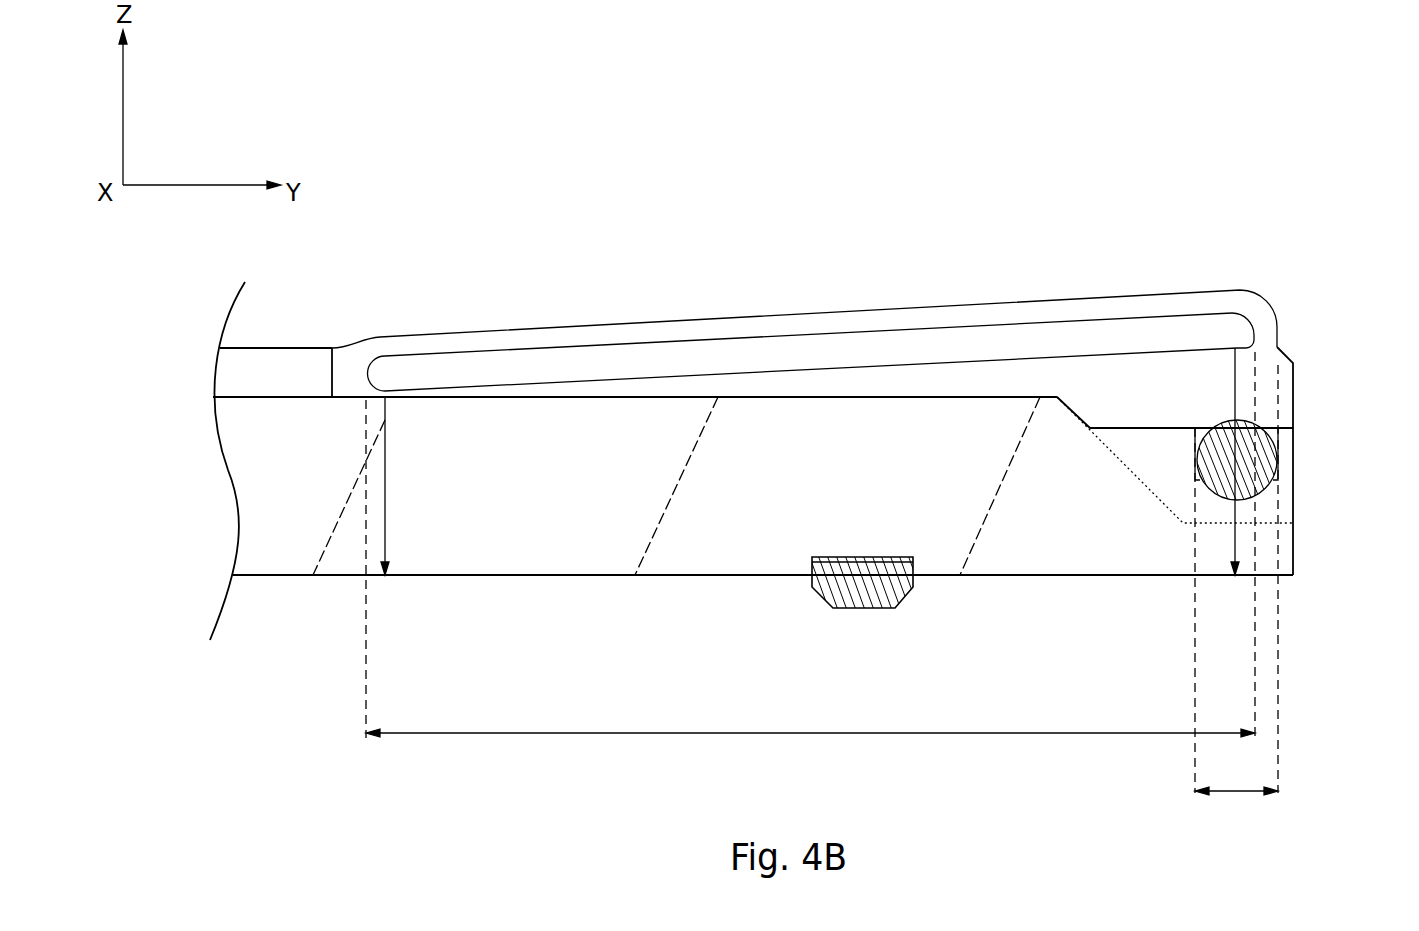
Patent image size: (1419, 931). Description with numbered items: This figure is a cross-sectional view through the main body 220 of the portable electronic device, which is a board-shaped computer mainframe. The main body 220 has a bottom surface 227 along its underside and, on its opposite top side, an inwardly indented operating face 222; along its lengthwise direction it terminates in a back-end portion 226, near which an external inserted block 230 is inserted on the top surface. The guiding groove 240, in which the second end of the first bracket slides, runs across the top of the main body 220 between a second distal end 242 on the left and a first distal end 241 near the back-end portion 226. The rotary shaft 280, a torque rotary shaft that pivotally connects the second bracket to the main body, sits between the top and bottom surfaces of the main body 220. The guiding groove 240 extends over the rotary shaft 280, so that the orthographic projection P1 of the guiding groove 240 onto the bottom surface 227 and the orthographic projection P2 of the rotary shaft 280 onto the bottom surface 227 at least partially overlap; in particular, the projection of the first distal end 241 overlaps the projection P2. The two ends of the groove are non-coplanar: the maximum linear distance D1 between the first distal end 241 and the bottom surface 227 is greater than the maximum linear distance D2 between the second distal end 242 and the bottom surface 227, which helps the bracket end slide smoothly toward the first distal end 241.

The main body 220 is at (270, 518).
The operating face 222 is at (970, 395).
The back-end portion 226 is at (1293, 385).
The bottom surface 227 is at (328, 577).
The external inserted block 230 is at (587, 333).
The guiding groove 240 is at (762, 343).
The first distal end 241 is at (1237, 332).
The second distal end 242 is at (387, 378).
The rotary shaft 280 is at (1262, 462).
The maximum linear distance D1 is at (1236, 542).
The maximum linear distance D2 is at (380, 455).
The orthographic projection P1 is at (810, 546).
The orthographic projection P2 is at (1236, 580).